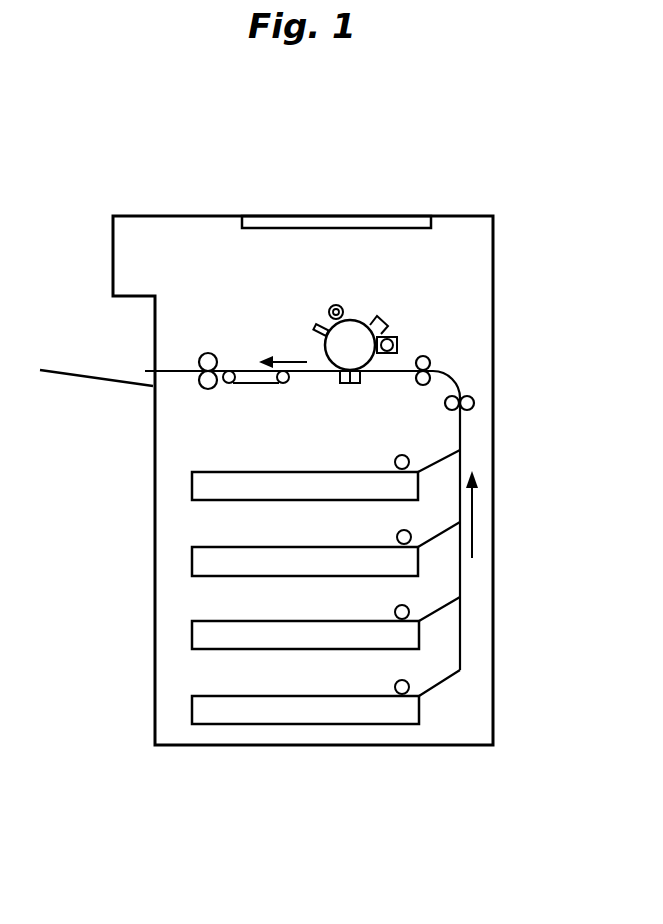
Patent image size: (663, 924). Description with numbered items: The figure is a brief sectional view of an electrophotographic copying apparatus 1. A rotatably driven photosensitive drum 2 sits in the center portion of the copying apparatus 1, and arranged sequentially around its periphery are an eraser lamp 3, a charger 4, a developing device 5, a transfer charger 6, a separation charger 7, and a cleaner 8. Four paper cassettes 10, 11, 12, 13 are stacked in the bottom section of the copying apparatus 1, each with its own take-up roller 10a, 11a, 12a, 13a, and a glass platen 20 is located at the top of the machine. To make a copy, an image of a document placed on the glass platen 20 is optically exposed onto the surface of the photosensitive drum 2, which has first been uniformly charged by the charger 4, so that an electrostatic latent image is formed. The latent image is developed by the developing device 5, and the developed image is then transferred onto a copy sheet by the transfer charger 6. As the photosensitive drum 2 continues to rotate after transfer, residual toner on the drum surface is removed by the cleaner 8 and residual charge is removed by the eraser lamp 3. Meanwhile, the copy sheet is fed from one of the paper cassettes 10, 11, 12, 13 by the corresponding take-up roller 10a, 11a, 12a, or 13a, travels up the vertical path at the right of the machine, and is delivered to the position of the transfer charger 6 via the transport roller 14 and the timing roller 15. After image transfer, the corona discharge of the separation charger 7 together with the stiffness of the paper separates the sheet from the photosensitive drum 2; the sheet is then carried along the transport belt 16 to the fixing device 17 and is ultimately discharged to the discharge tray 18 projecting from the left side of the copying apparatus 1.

The copying apparatus 1 is at (502, 260).
The photosensitive drum 2 is at (355, 320).
The eraser lamp 3 is at (327, 299).
The charger 4 is at (384, 320).
The developing device 5 is at (398, 340).
The transfer charger 6 is at (355, 386).
The separation charger 7 is at (343, 386).
The cleaner 8 is at (315, 330).
The paper cassette 10 is at (205, 472).
The take-up roller 10a is at (394, 462).
The paper cassette 11 is at (205, 547).
The take-up roller 11a is at (396, 537).
The paper cassette 12 is at (205, 621).
The take-up roller 12a is at (394, 612).
The paper cassette 13 is at (205, 696).
The take-up roller 13a is at (394, 687).
The transport roller 14 is at (445, 405).
The timing roller 15 is at (429, 359).
The transport belt 16 is at (262, 384).
The fixing device 17 is at (209, 352).
The discharge tray 18 is at (52, 369).
The glass platen 20 is at (408, 213).